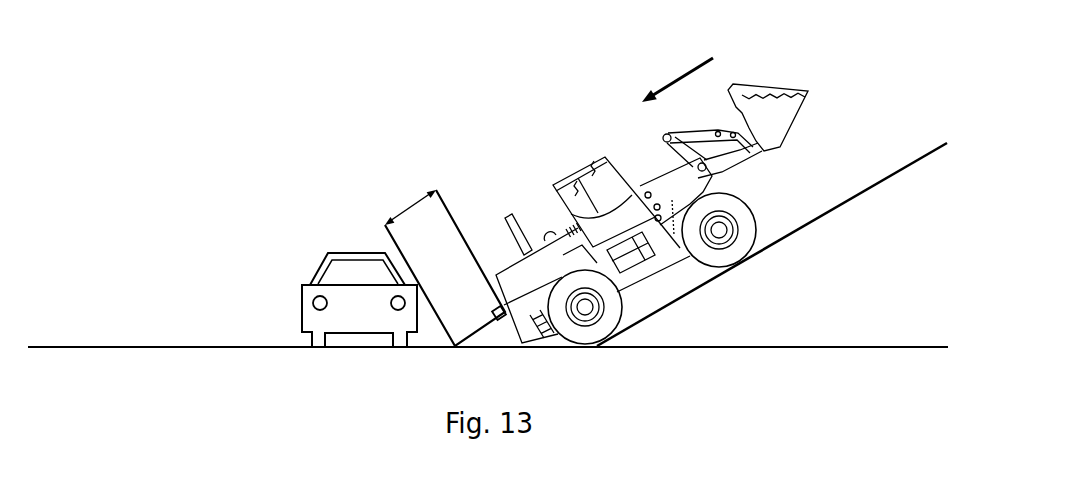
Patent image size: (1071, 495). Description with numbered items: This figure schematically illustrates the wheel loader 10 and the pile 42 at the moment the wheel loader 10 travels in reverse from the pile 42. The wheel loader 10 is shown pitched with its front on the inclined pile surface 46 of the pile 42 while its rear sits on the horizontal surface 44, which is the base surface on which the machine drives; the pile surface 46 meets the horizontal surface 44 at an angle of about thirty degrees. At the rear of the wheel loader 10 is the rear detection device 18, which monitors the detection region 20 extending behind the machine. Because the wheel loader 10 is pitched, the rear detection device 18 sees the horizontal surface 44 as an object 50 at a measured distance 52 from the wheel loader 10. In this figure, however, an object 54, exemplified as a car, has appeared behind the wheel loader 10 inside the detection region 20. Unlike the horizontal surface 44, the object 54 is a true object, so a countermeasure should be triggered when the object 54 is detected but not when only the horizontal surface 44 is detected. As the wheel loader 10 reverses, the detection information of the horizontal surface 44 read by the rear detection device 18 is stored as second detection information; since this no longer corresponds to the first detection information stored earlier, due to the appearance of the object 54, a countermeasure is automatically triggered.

The wheel loader 10 is at (499, 139).
The rear detection device 18 is at (494, 308).
The detection region 20 is at (362, 207).
The pile 42 is at (894, 246).
The horizontal surface 44 is at (287, 348).
The pile surface 46 is at (753, 255).
The object 50 is at (355, 348).
The distance 52 is at (410, 206).
The object 54 is at (374, 316).